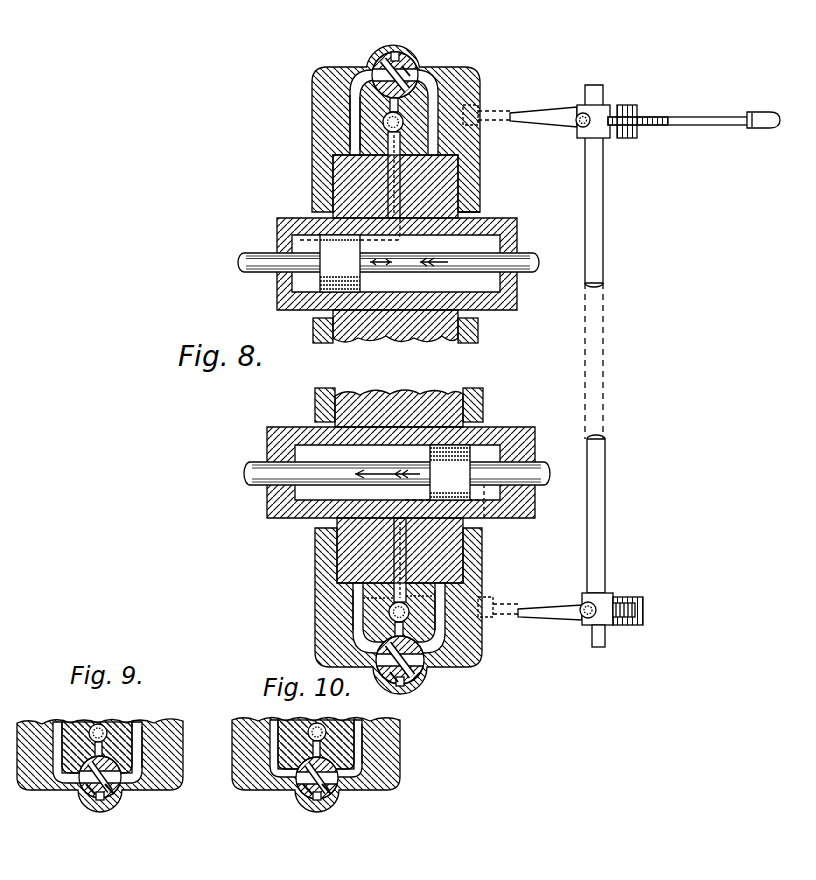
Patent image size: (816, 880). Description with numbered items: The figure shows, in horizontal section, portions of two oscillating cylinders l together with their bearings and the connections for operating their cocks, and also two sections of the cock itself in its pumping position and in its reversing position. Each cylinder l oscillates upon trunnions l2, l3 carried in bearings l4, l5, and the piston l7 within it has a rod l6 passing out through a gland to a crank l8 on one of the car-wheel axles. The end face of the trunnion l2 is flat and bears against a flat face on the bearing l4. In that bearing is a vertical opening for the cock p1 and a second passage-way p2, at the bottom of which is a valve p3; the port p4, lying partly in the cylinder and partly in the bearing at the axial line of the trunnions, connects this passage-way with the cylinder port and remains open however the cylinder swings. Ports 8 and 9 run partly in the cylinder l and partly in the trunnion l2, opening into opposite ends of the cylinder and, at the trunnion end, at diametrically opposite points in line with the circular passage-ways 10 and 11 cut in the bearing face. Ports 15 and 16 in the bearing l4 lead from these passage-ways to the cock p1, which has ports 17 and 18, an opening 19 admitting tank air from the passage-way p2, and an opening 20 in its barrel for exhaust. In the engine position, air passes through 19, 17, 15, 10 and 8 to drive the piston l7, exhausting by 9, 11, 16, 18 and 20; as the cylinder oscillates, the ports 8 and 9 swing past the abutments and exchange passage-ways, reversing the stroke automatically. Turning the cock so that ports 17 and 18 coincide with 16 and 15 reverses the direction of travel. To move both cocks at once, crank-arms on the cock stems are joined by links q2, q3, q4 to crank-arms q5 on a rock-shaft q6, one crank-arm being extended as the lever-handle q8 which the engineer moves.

In FIG. 8, the cylinder l is at (498, 222).
In FIG. 8, the trunnion l2 is at (340, 195).
In FIG. 8, the trunnion l3 is at (370, 342).
In FIG. 8, the bearing l4 is at (312, 128).
In FIG. 9, the bearing l4 is at (24, 792).
In FIG. 10, the bearing l4 is at (262, 792).
In FIG. 8, the bearing l5 is at (478, 332).
In FIG. 8, the piston rod l6 is at (244, 262).
In FIG. 8, the piston l7 is at (340, 285).
In FIG. 8, the crank l8 is at (462, 168).
In FIG. 8, the cock p1 is at (413, 50).
In FIG. 9, the cock p1 is at (94, 810).
In FIG. 10, the cock p1 is at (348, 792).
In FIG. 9, the passage-way p2 is at (96, 722).
In FIG. 10, the passage-way p2 is at (312, 720).
In FIG. 8, the valve p3 is at (385, 120).
In FIG. 9, the valve p3 is at (104, 726).
In FIG. 10, the valve p3 is at (326, 730).
In FIG. 8, the port p4 is at (388, 172).
In FIG. 8, the link q2 is at (475, 102).
In FIG. 8, the link q3 is at (556, 628).
In FIG. 8, the link q4 is at (606, 130).
In FIG. 8, the crank-arm q5 is at (645, 618).
In FIG. 8, the rock-shaft q6 is at (607, 339).
In FIG. 8, the lever-handle q8 is at (694, 124).
In FIG. 8, the port 8 is at (486, 506).
In FIG. 8, the port 9 is at (304, 238).
In FIG. 8, the passage-way 10 is at (440, 596).
In FIG. 8, the passage-way 11 is at (360, 598).
In FIG. 8, the port 15 is at (350, 85).
In FIG. 9, the port 15 is at (142, 728).
In FIG. 10, the port 15 is at (362, 756).
In FIG. 8, the port 16 is at (436, 80).
In FIG. 9, the port 16 is at (59, 722).
In FIG. 10, the port 16 is at (272, 722).
In FIG. 8, the port 17 is at (362, 82).
In FIG. 9, the port 17 is at (112, 800).
In FIG. 10, the port 17 is at (304, 800).
In FIG. 8, the port 18 is at (409, 70).
In FIG. 9, the port 18 is at (86, 800).
In FIG. 10, the port 18 is at (330, 800).
In FIG. 8, the opening 19 is at (388, 104).
In FIG. 9, the opening 19 is at (102, 750).
In FIG. 10, the opening 19 is at (322, 742).
In FIG. 8, the opening 20 is at (392, 54).
In FIG. 9, the opening 20 is at (100, 802).
In FIG. 10, the opening 20 is at (317, 802).